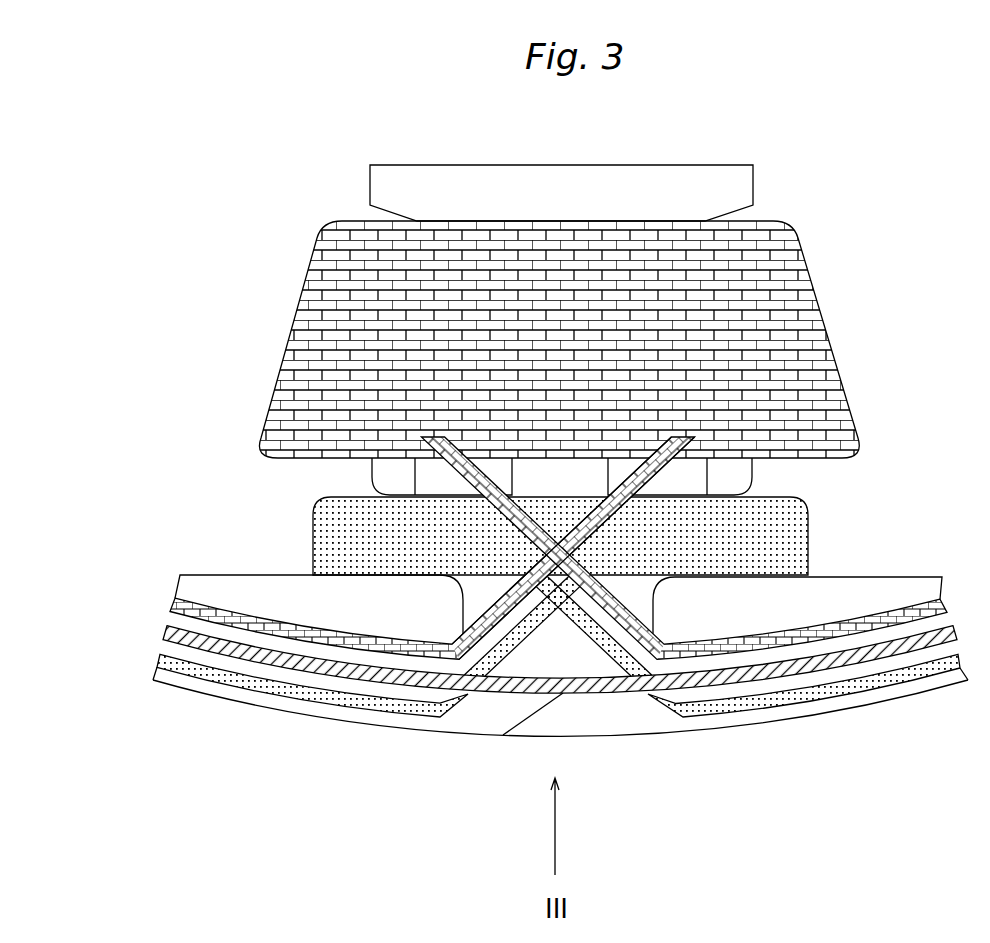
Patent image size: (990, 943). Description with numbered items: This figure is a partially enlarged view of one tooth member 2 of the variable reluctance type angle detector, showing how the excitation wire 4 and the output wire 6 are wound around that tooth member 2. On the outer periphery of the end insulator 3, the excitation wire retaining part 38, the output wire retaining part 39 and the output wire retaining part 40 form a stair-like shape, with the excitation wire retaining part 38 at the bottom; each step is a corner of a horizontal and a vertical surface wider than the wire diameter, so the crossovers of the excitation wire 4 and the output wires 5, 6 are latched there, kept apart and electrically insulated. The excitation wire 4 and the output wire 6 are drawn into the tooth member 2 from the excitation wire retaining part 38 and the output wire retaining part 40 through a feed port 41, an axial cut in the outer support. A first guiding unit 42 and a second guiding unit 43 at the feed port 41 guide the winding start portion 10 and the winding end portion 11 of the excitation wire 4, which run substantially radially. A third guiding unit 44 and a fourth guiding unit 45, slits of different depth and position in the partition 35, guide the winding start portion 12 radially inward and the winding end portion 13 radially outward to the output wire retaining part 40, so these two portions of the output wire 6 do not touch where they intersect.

The tooth member 2 is at (777, 145).
The end insulator 3 is at (178, 722).
The excitation wire 4 is at (313, 559).
The output wire 5 is at (270, 662).
The output wire 6 is at (287, 335).
The winding start portion 10 is at (580, 640).
The winding end portion 11 is at (600, 683).
The winding start portion 12 is at (733, 493).
The winding end portion 13 is at (375, 494).
The partition 35 is at (752, 470).
The excitation wire retaining part 38 is at (898, 695).
The output wire retaining part 39 is at (810, 683).
The output wire retaining part 40 is at (733, 668).
The feed port 41 is at (594, 752).
The first guiding unit 42 is at (490, 717).
The second guiding unit 43 is at (495, 642).
The third guiding unit 44 is at (690, 482).
The fourth guiding unit 45 is at (430, 478).